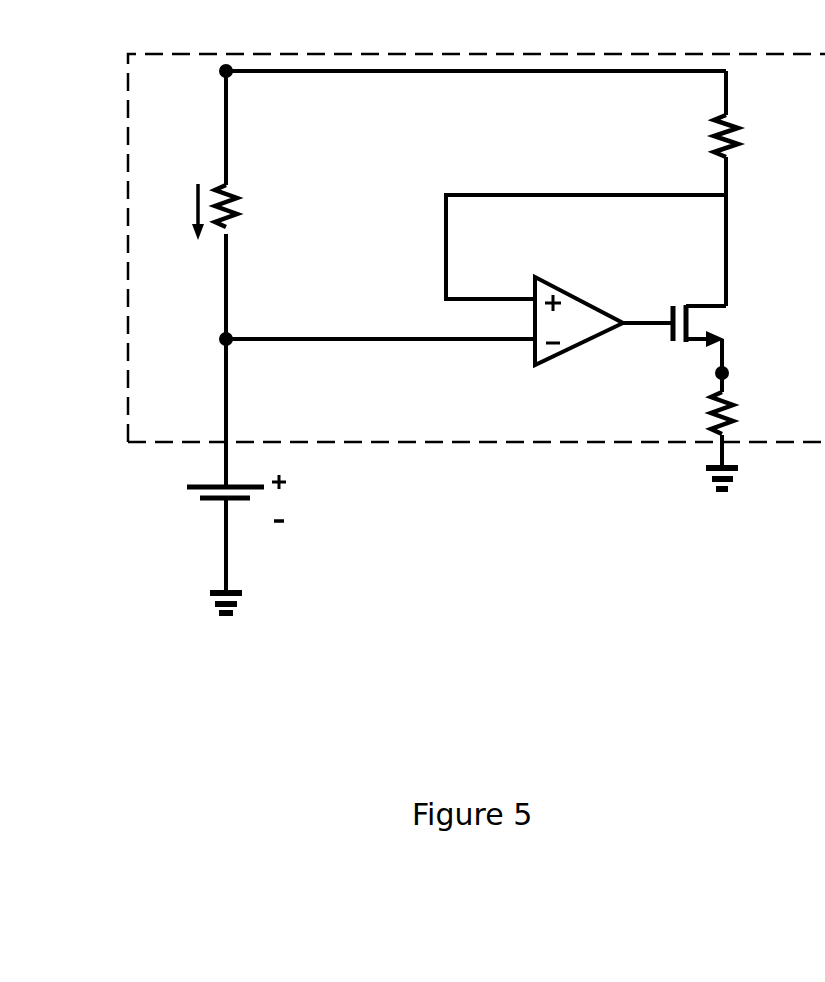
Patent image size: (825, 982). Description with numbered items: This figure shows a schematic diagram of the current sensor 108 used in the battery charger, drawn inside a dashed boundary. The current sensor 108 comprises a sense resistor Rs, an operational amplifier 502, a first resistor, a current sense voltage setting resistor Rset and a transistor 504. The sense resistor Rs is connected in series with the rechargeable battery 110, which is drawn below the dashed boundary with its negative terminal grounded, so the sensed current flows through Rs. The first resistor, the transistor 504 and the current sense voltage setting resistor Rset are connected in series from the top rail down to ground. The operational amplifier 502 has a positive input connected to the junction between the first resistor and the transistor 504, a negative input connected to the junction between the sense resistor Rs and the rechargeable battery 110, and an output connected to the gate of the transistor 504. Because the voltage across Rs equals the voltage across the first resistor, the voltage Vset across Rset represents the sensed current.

The current sensor 108 is at (476, 307).
The rechargeable battery 110 is at (190, 500).
The operational amplifier 502 is at (533, 367).
The transistor 504 is at (671, 357).